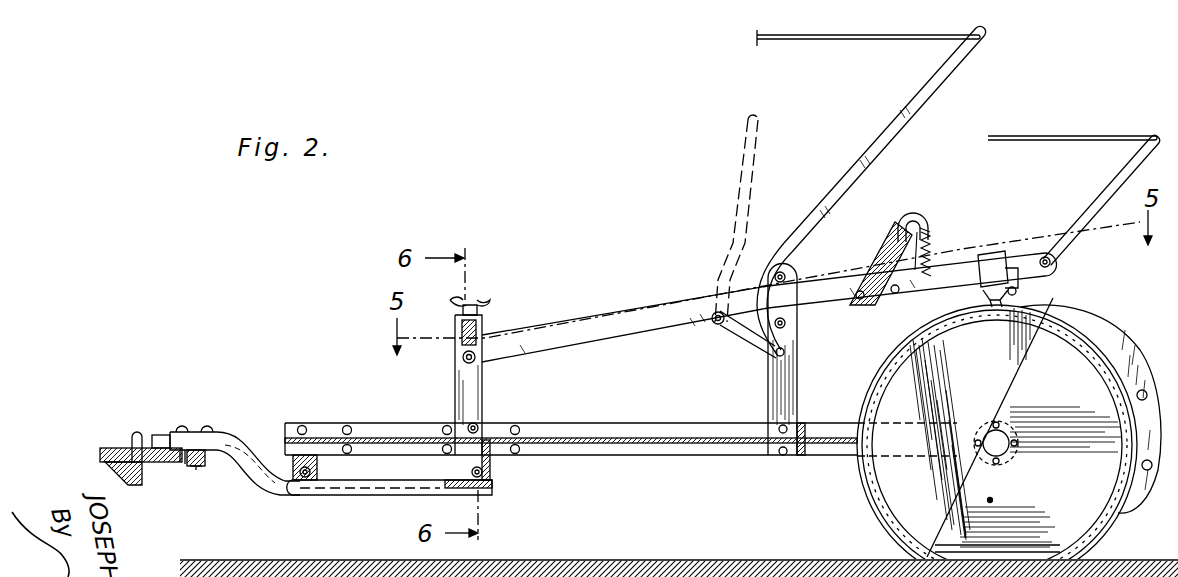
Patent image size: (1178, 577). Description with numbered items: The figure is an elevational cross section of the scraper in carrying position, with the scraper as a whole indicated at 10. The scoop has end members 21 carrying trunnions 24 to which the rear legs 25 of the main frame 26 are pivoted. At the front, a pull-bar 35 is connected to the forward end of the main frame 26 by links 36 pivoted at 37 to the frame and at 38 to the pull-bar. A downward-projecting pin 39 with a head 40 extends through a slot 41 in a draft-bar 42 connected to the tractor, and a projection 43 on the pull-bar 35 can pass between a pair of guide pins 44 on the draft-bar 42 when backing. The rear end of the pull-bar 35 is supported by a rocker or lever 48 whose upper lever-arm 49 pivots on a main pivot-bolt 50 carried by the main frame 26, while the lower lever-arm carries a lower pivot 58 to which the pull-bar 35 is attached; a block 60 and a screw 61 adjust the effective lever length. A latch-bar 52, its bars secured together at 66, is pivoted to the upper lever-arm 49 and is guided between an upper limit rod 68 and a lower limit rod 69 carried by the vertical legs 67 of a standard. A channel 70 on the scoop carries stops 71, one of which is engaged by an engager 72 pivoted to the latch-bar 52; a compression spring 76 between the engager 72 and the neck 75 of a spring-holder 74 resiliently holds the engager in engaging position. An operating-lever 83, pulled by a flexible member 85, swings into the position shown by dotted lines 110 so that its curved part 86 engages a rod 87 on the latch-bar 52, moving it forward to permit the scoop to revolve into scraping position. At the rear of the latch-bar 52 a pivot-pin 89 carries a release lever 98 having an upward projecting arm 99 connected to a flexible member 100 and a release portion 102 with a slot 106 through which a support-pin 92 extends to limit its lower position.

The planter implement 10 is at (196, 410).
The end members 21 is at (917, 497).
The trunnions 24 is at (1016, 452).
The rear legs 25 is at (840, 447).
The main frame 26 is at (635, 447).
The pull-bar 35 is at (333, 490).
The links 36 is at (282, 463).
The pivot 37 is at (305, 428).
The pivot 38 is at (300, 478).
The downward-projecting pin 39 is at (193, 462).
The head 40 is at (197, 468).
The slot 41 is at (183, 458).
The draft-bar 42 is at (132, 455).
The projection 43 is at (158, 435).
The guide pins 44 is at (135, 435).
The rocker or lever 48 is at (478, 420).
The upper lever-arm 49 is at (472, 392).
The main pivot-bolt 50 is at (492, 428).
The latch-bar 52 is at (523, 349).
The lower pivot 58 is at (487, 475).
The block 60 is at (468, 357).
The screw 61 is at (470, 332).
The securing means 66 is at (711, 322).
The vertical legs 67 is at (583, 337).
The upper limit rod 68 is at (785, 275).
The lower limit rod 69 is at (790, 324).
The channel 70 is at (1097, 345).
The stops 71 is at (985, 312).
The engager 72 is at (955, 275).
The spring-holder 74 is at (876, 262).
The neck 75 is at (912, 222).
The compression spring 76 is at (933, 262).
The operating-lever 83 is at (900, 107).
The flexible member 85 is at (800, 38).
The curved part 86 is at (757, 283).
The rod 87 is at (722, 324).
The pivot-pin 89 is at (1055, 264).
The support-pin 92 is at (1020, 284).
The lever 98 is at (1089, 209).
The upward projecting arm 99 is at (1130, 160).
The flexible member 100 is at (1045, 138).
The release portion 102 is at (987, 253).
The slot 106 is at (1010, 268).
The dotted lines 110 is at (737, 182).